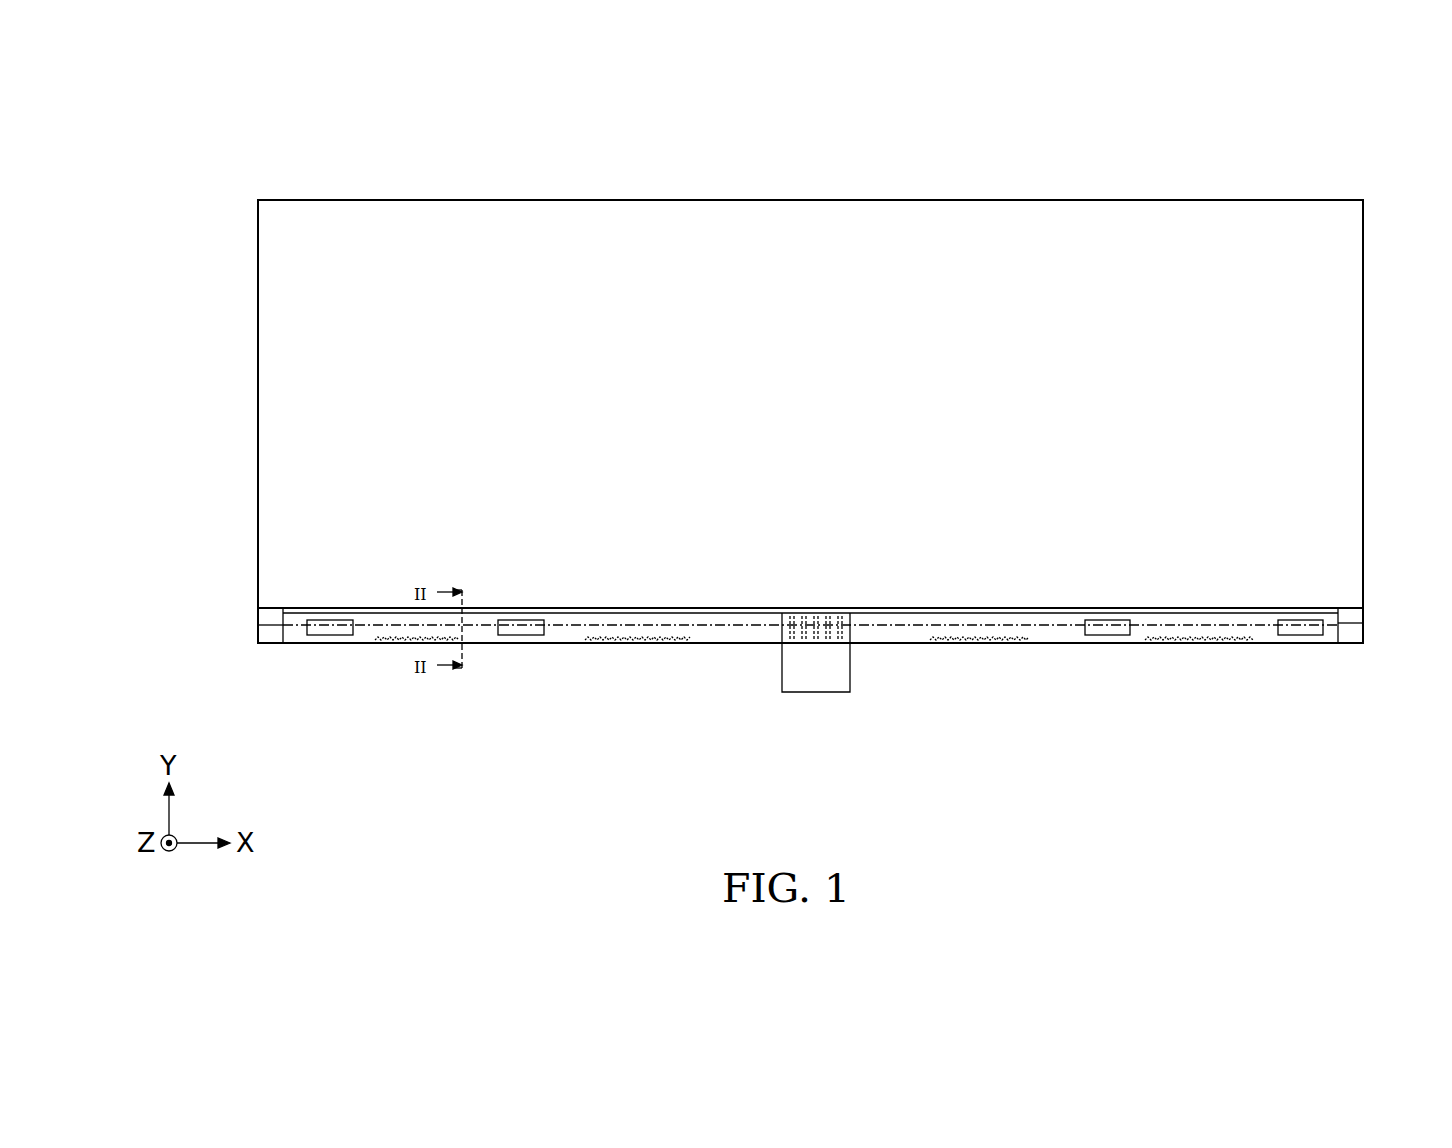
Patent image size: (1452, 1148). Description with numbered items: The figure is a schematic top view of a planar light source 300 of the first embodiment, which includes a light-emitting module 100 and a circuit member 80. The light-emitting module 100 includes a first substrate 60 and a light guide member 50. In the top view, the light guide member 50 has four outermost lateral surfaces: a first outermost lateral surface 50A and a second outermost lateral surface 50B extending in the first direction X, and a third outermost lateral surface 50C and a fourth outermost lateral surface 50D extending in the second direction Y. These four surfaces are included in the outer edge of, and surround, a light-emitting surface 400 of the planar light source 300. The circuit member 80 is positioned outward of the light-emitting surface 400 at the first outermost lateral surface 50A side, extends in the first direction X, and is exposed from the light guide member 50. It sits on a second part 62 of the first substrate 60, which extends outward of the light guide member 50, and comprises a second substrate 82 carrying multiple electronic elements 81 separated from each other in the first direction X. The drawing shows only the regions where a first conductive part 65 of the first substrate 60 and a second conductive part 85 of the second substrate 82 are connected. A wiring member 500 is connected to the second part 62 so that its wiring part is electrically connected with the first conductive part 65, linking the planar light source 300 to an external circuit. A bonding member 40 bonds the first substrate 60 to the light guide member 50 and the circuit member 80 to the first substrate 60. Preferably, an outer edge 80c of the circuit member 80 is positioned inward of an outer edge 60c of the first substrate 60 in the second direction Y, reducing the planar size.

The planar light source 300 is at (1112, 168).
The light-emitting module 100 is at (1011, 190).
The light guide member 50 is at (880, 199).
The first outermost lateral surface 50A is at (880, 625).
The second outermost lateral surface 50B is at (620, 199).
The third outermost lateral surface 50C is at (257, 408).
The fourth outermost lateral surface 50D is at (1365, 403).
The light-emitting surface 400 is at (735, 288).
The bonding member 40 is at (265, 617).
The first substrate 60 is at (250, 637).
The second part 62 is at (271, 635).
The outer edge 60c is at (1353, 645).
The circuit member 80 is at (1348, 632).
The outer edge 80c is at (1320, 645).
The electronic element 81 is at (328, 628).
The second substrate 82 is at (730, 632).
The second conductive part 85 is at (388, 648).
The first conductive part 65 is at (805, 645).
The wiring member 500 is at (815, 672).